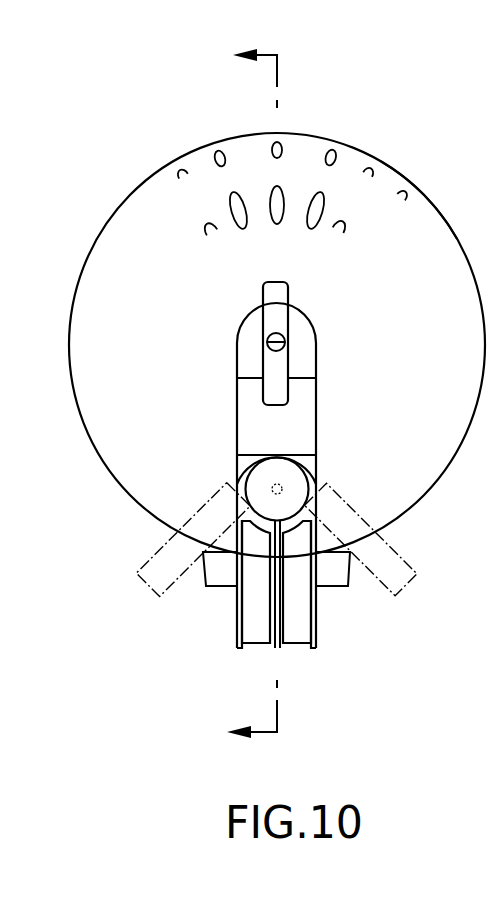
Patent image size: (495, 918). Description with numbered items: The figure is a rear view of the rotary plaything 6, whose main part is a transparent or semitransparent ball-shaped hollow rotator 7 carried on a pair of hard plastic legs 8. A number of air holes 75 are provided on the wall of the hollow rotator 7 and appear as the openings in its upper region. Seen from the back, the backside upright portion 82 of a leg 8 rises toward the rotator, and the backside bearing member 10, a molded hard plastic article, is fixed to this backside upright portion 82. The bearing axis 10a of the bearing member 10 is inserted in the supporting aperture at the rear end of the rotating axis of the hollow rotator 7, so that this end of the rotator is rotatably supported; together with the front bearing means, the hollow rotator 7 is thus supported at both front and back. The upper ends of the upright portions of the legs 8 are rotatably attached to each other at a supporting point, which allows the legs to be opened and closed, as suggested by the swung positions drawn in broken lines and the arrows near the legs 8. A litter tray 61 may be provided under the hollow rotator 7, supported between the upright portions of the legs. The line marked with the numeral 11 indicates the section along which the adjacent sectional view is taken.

The rotary plaything 6 is at (378, 135).
The hollow rotator 7 is at (412, 212).
The air holes 75 is at (217, 155).
The backside bearing member 10 is at (305, 366).
The bearing axis 10a is at (283, 339).
The legs 8 is at (238, 628).
The backside upright portion 82 is at (295, 612).
The litter tray 61 is at (338, 567).
The section line 11- 11 is at (280, 397).